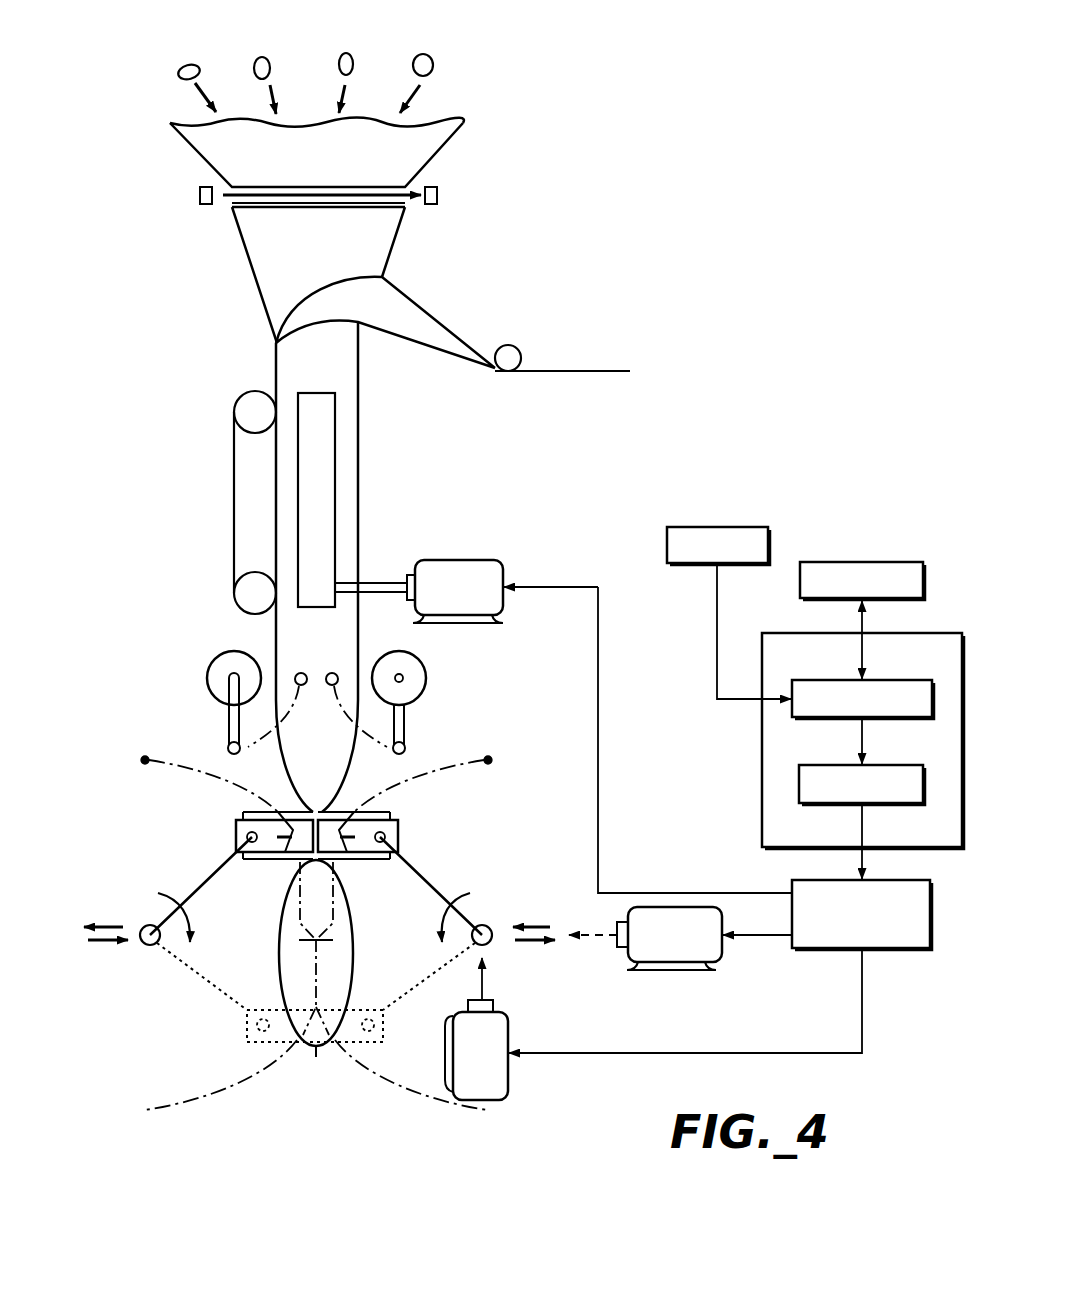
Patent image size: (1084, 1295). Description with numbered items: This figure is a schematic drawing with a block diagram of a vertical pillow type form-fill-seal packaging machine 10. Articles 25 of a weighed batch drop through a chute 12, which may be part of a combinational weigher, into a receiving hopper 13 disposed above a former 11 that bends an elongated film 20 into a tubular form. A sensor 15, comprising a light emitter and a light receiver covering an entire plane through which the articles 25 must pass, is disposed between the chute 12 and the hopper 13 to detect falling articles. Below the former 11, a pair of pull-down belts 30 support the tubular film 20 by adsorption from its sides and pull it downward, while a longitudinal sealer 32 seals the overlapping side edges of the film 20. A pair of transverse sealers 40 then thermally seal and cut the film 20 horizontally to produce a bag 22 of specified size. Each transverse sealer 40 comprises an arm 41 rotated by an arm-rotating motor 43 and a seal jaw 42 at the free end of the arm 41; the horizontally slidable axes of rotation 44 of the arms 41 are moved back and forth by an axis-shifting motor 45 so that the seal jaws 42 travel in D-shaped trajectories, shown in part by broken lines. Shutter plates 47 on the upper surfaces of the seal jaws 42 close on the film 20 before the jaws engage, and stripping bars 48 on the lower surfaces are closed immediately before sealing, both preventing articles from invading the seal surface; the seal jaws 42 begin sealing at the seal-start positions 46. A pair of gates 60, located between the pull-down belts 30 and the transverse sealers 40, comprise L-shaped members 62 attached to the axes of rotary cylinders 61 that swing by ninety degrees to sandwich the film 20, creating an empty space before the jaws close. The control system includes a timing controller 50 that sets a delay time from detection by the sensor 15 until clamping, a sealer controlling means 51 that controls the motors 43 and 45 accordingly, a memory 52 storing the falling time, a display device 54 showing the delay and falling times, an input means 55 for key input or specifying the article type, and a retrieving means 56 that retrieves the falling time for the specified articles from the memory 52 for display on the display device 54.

The packaging machine 10 is at (667, 218).
The former 11 is at (405, 310).
The chute 12 is at (205, 143).
The receiving hopper 13 is at (253, 257).
The sensor 15 is at (437, 197).
The film 20 is at (547, 371).
The bag 22 is at (280, 927).
The articles 25 is at (268, 60).
The pull-down belts 30 is at (325, 502).
The longitudinal sealer 32 is at (248, 510).
The transverse sealers 40 is at (158, 815).
The arm 41 is at (200, 880).
The seal jaw 42 is at (240, 833).
The arm-rotating motor 43 is at (498, 1073).
The axes of rotation 44 is at (150, 946).
The axis-shifting motor 45 is at (665, 953).
The seal-start positions 46 is at (320, 942).
The shutter plates 47 is at (270, 820).
The stripping bars 48 is at (272, 862).
The timing controller 50 is at (762, 762).
The sealer controlling means 51 is at (825, 950).
The memory 52 is at (833, 562).
The display device 54 is at (875, 765).
The input means 55 is at (690, 527).
The retrieving means 56 is at (875, 680).
The gates 60 is at (177, 692).
The rotary cylinders 61 is at (215, 670).
The L-shaped members 62 is at (228, 720).